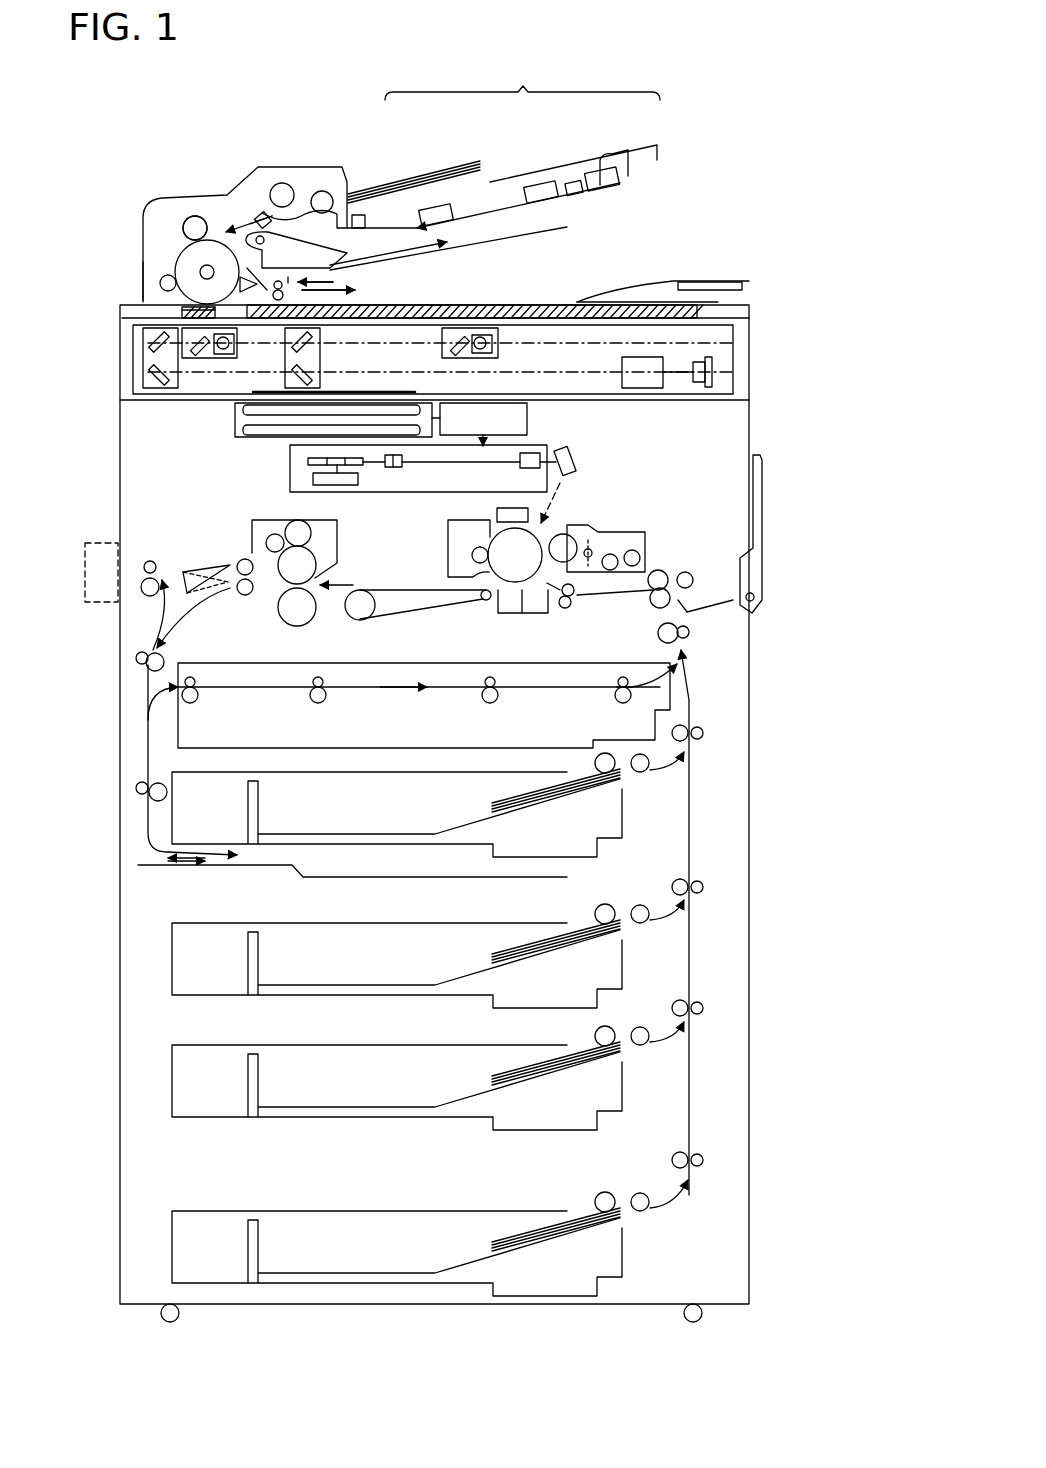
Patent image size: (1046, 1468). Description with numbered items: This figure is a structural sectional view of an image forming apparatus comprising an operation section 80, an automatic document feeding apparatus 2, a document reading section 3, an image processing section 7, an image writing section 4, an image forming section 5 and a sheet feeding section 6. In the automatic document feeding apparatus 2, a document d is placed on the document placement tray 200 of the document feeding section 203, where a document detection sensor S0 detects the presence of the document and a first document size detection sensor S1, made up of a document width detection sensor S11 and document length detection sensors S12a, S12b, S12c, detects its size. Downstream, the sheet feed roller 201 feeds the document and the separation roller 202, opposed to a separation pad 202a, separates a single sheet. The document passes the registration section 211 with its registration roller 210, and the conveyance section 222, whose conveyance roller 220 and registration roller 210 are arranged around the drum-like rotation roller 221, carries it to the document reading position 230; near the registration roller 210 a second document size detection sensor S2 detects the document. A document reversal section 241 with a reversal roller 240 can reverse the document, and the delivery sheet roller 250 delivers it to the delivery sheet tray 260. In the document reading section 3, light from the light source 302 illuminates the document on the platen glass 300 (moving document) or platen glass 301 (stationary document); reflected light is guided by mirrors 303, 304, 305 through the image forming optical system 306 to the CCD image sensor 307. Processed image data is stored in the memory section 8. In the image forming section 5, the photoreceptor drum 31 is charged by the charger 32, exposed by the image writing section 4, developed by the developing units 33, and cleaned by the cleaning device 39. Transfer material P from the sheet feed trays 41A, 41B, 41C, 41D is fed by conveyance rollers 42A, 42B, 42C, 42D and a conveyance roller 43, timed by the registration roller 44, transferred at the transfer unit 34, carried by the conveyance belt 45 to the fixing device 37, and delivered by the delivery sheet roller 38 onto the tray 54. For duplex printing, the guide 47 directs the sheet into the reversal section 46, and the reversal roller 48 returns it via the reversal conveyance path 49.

The automatic document feeding apparatus 2 is at (648, 197).
The document reading section 3 is at (718, 325).
The image writing section 4 is at (547, 441).
The image forming section 5 is at (657, 541).
The sheet feeding section 6 is at (712, 998).
The image processing section 7 is at (235, 425).
The memory section 8 is at (527, 409).
The photoreceptor drum 31 is at (551, 527).
The charger 32 is at (497, 514).
The developing units 33 is at (583, 523).
The transfer unit 34 is at (512, 619).
The fixing device 37 is at (337, 558).
The delivery sheet roller 38 is at (145, 552).
The cleaning device 39 is at (448, 531).
The sheet feed tray 41A is at (367, 823).
The sheet feed tray 41B is at (367, 974).
The sheet feed tray 41C is at (367, 1096).
The sheet feed tray 41D is at (367, 1262).
The conveyance roller 42A is at (624, 771).
The conveyance roller 42B is at (624, 922).
The conveyance roller 42C is at (624, 1044).
The conveyance roller 42D is at (624, 1210).
The conveyance roller 43 is at (690, 642).
The registration roller 44 is at (573, 613).
The conveyance belt 45 is at (410, 613).
The reversal section 46 is at (148, 850).
The guide 47 is at (208, 565).
The reversal roller 48 is at (137, 790).
The reversal conveyance path 49 is at (367, 689).
The tray 54 is at (85, 577).
The operation section 80 is at (714, 272).
The document placement tray 200 is at (660, 148).
The sheet feed roller 201 is at (322, 191).
The separation roller 202 is at (282, 183).
The separation pad 202a is at (266, 212).
The document feeding section 203 is at (630, 178).
The registration roller 210 is at (192, 216).
The registration section 211 is at (172, 220).
The conveyance roller 220 is at (143, 265).
The rotation roller 221 is at (182, 252).
The conveyance section 222 is at (160, 293).
The document reading position 230 is at (215, 316).
The reversal roller 240 is at (314, 248).
The document reversal section 241 is at (343, 285).
The delivery sheet roller 250 is at (264, 244).
The delivery sheet tray 260 is at (471, 235).
The platen glass 300 is at (182, 310).
The platen glass 301 is at (527, 312).
The light source 302 is at (222, 350).
The mirror 303 is at (198, 352).
The mirror 304 is at (150, 342).
The mirror 305 is at (150, 375).
The image forming optical system 306 is at (645, 350).
The CCD image sensor 307 is at (700, 362).
The document detection sensor S0 is at (358, 213).
The first document size detection sensor S1 is at (536, 81).
The document width detection sensor S11 is at (600, 170).
The document length detection sensor S12a is at (433, 207).
The document length detection sensor S12b is at (533, 184).
The document length detection sensor S12c is at (573, 182).
The second document size detection sensor S2 is at (257, 213).
The transfer material P is at (507, 800).
The document d is at (396, 185).